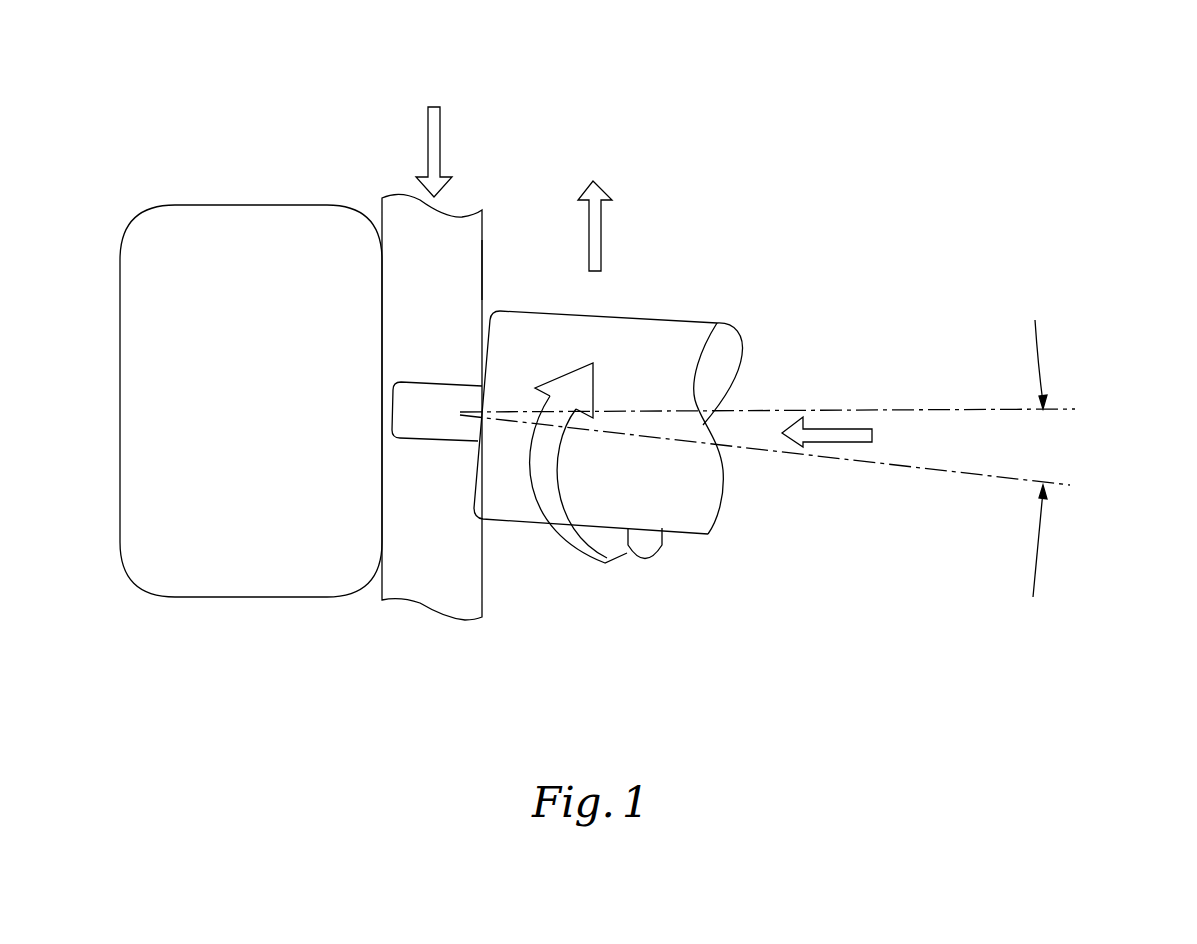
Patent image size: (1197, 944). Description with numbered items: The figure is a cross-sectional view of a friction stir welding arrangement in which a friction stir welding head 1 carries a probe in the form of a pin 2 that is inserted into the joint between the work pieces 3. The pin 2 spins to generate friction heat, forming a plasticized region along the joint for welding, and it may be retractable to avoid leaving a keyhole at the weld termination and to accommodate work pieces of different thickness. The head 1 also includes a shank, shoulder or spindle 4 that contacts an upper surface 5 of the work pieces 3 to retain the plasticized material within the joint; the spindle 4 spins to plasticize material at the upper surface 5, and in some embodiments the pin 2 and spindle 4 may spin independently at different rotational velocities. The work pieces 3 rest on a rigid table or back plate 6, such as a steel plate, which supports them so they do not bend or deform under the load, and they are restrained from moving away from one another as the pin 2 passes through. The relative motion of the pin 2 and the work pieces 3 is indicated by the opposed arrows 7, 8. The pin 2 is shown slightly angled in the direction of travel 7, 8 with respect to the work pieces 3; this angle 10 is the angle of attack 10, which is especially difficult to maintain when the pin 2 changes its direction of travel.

The friction stir welding head 1 is at (517, 300).
The pin 2 is at (418, 412).
The work pieces 3 is at (402, 208).
The spindle 4 is at (667, 333).
The upper surface 5 is at (483, 275).
The back plate 6 is at (162, 237).
The arrow 7 is at (435, 142).
The arrow 8 is at (595, 193).
The angle of attack 10 is at (1057, 448).